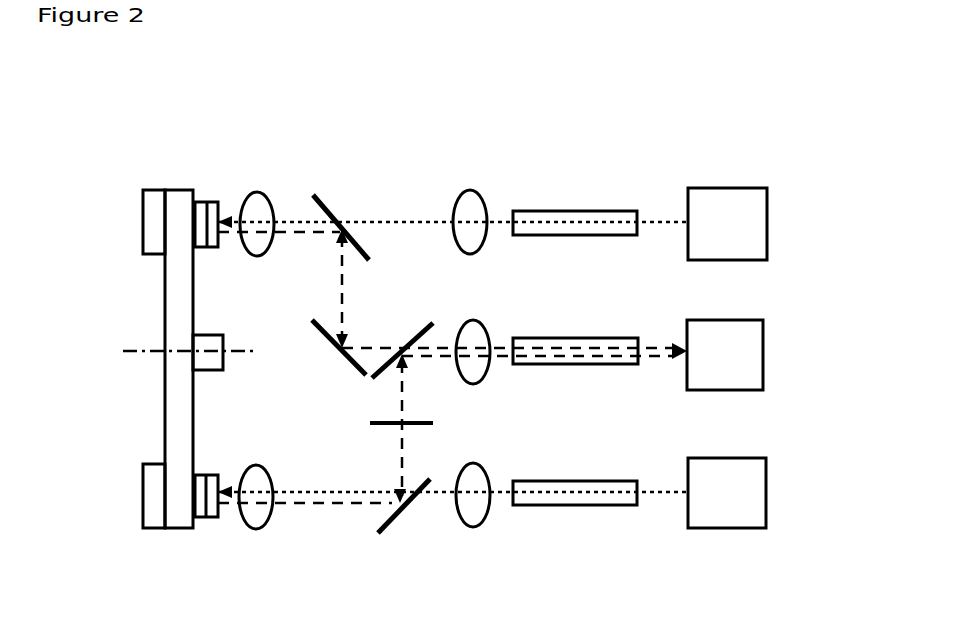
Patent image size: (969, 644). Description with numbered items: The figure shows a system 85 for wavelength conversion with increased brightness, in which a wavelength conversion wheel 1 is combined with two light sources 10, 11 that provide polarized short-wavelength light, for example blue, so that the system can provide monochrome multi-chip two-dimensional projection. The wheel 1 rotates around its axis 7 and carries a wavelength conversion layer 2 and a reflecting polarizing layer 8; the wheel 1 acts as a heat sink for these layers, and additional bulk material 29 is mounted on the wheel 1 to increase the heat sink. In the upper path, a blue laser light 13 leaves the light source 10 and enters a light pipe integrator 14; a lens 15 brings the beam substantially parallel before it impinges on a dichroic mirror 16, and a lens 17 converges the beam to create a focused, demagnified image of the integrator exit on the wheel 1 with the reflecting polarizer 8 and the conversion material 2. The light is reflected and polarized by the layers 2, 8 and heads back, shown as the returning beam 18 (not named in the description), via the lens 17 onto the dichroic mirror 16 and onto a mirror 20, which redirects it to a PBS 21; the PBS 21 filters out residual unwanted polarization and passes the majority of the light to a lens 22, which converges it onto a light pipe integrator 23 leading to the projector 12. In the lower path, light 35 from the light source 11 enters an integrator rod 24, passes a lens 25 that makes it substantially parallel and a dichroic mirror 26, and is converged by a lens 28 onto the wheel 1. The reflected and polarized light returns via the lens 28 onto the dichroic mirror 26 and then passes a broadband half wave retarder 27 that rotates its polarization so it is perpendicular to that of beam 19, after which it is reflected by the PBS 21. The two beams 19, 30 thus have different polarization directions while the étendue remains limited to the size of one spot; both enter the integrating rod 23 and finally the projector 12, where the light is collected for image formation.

The wavelength conversion wheel 1 is at (170, 190).
The wavelength conversion layer 2 is at (197, 202).
The axis 7 is at (130, 350).
The reflecting polarizing layer 8 is at (218, 202).
The light source 10 is at (757, 188).
The light source 11 is at (757, 458).
The projector 12 is at (753, 320).
The blue laser light 13 is at (648, 221).
The light pipe integrator 14 is at (538, 211).
The lens 15 is at (470, 190).
The dichroic mirror 16 is at (328, 207).
The lens 17 is at (253, 193).
The returned light beam 18 is at (223, 233).
The light beam 19 is at (435, 348).
The mirror 20 is at (318, 327).
The PBS 21 is at (410, 343).
The lens 22 is at (470, 318).
The light pipe integrator 23 is at (533, 338).
The integrator rod 24 is at (525, 481).
The lens 25 is at (470, 463).
The dichroic mirror 26 is at (385, 530).
The broadband half wave retarder 27 is at (370, 423).
The lens 28 is at (252, 465).
The bulk material 29 is at (143, 217).
The light beam 30 is at (433, 357).
The light 35 is at (678, 490).
The optical measurement system 85 is at (436, 114).